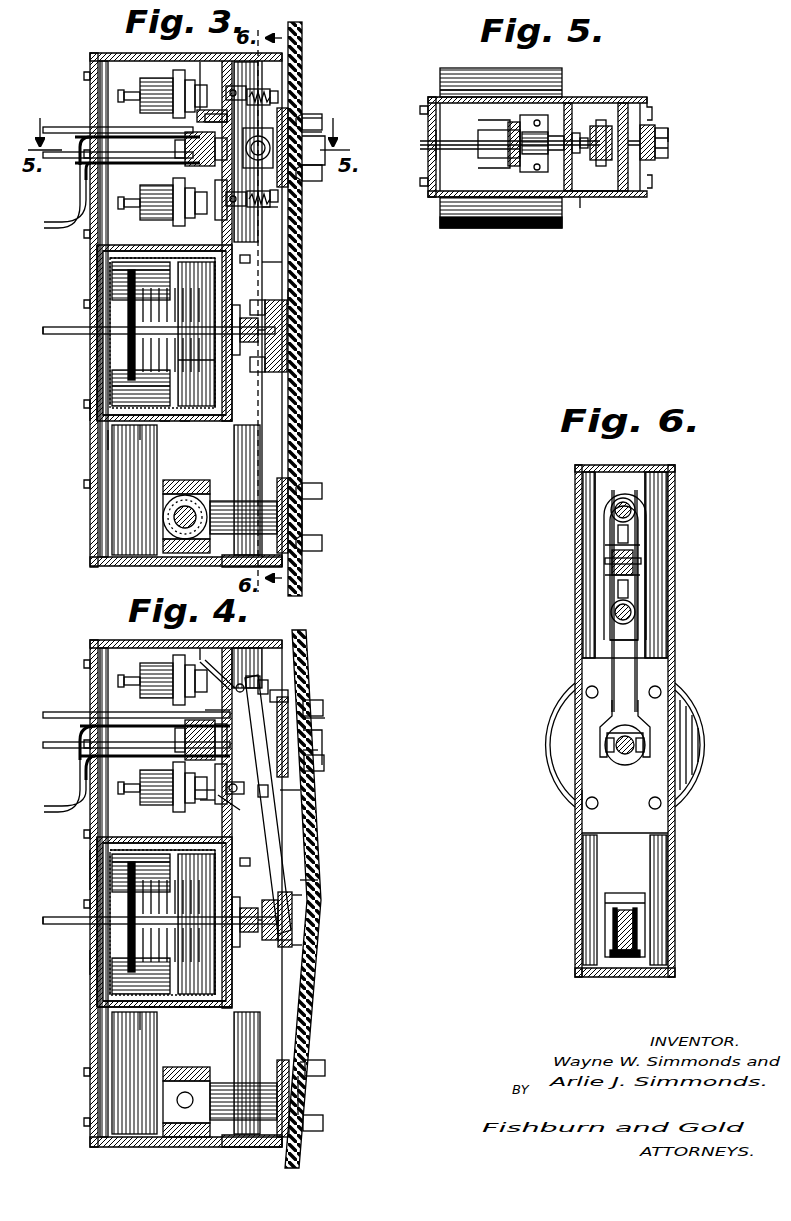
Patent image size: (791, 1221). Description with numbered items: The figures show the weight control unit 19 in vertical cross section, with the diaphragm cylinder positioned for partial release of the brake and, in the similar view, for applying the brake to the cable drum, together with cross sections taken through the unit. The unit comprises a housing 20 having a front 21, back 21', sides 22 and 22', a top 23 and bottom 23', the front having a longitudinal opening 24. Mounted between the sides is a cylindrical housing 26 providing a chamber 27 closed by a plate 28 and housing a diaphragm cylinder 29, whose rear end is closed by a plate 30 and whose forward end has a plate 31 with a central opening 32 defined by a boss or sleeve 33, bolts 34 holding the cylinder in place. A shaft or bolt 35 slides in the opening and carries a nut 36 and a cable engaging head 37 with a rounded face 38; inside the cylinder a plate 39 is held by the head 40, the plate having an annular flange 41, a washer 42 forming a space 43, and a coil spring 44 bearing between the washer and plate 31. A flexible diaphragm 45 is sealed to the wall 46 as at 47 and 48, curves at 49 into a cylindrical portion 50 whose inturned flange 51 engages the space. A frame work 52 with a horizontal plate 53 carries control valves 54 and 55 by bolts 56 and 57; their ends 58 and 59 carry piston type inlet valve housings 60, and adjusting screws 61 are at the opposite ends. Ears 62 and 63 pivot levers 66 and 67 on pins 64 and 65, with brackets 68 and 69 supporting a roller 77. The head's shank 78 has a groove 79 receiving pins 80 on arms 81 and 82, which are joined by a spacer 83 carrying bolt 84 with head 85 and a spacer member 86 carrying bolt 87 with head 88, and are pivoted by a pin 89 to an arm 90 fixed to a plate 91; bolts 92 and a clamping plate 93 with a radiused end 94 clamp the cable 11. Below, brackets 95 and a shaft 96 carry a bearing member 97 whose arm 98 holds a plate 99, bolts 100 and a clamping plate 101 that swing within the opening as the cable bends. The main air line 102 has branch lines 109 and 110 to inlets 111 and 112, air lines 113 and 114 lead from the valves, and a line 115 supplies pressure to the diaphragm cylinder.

In FIG. 3, the cable 11 is at (303, 30).
In FIG. 4, the cable 11 is at (304, 636).
In FIG. 5, the cable 11 is at (670, 144).
In FIG. 3, the weight control unit 19 is at (98, 62).
In FIG. 4, the weight control unit 19 is at (98, 648).
In FIG. 5, the weight control unit 19 is at (430, 98).
In FIG. 6, the weight control unit 19 is at (676, 468).
In FIG. 4, the housing 20 is at (98, 866).
In FIG. 5, the housing 20 is at (592, 198).
In FIG. 3, the front 21 is at (327, 418).
In FIG. 5, the front 21 is at (662, 143).
In FIG. 3, the back 21' is at (76, 413).
In FIG. 4, the back 21' is at (72, 966).
In FIG. 5, the back 21' is at (417, 165).
In FIG. 5, the side 22 is at (501, 157).
In FIG. 6, the side 22 is at (605, 811).
In FIG. 3, the side 22' is at (186, 505).
In FIG. 4, the side 22' is at (107, 984).
In FIG. 5, the side 22' is at (537, 135).
In FIG. 6, the side 22' is at (653, 565).
In FIG. 3, the top 23 is at (186, 299).
In FIG. 4, the top 23 is at (186, 880).
In FIG. 6, the top 23 is at (618, 709).
In FIG. 3, the bottom 23' is at (225, 505).
In FIG. 4, the bottom 23' is at (186, 1090).
In FIG. 6, the bottom 23' is at (599, 985).
In FIG. 5, the longitudinal opening 24 is at (660, 156).
In FIG. 6, the longitudinal opening 24 is at (634, 470).
In FIG. 3, the cylindrical housing 26 is at (150, 438).
In FIG. 4, the cylindrical housing 26 is at (195, 836).
In FIG. 5, the cylindrical housing 26 is at (482, 222).
In FIG. 6, the cylindrical housing 26 is at (548, 722).
In FIG. 3, the chamber 27 is at (195, 245).
In FIG. 4, the chamber 27 is at (170, 837).
In FIG. 3, the plate 28 is at (232, 412).
In FIG. 4, the plate 28 is at (234, 876).
In FIG. 5, the plate 28 is at (580, 132).
In FIG. 6, the plate 28 is at (578, 792).
In FIG. 3, the diaphragm cylinder 29 is at (185, 421).
In FIG. 4, the diaphragm cylinder 29 is at (205, 1008).
In FIG. 6, the diaphragm cylinder 29 is at (556, 762).
In FIG. 3, the plate 30 is at (103, 292).
In FIG. 4, the plate 30 is at (103, 940).
In FIG. 3, the plate 31 is at (206, 285).
In FIG. 4, the plate 31 is at (236, 990).
In FIG. 3, the central opening 32 is at (242, 345).
In FIG. 4, the central opening 32 is at (240, 918).
In FIG. 3, the boss or sleeve 33 is at (244, 310).
In FIG. 4, the boss or sleeve 33 is at (244, 935).
In FIG. 3, the bolts 34 is at (263, 262).
In FIG. 4, the bolts 34 is at (245, 856).
In FIG. 5, the bolts 34 is at (602, 100).
In FIG. 6, the bolts 34 is at (672, 692).
In FIG. 3, the shaft or bolt 35 is at (200, 360).
In FIG. 4, the shaft or bolt 35 is at (268, 936).
In FIG. 6, the shaft or bolt 35 is at (626, 768).
In FIG. 4, the nut 36 is at (280, 890).
In FIG. 3, the cable engaging head 37 is at (289, 331).
In FIG. 4, the cable engaging head 37 is at (300, 919).
In FIG. 6, the cable engaging head 37 is at (614, 762).
In FIG. 3, the rounded face 38 is at (303, 298).
In FIG. 4, the rounded face 38 is at (318, 880).
In FIG. 3, the plate 39 is at (128, 346).
In FIG. 4, the plate 39 is at (150, 926).
In FIG. 3, the head 40 is at (122, 328).
In FIG. 4, the head 40 is at (150, 930).
In FIG. 3, the annular flange 41 is at (112, 276).
In FIG. 4, the annular flange 41 is at (115, 882).
In FIG. 3, the washer 42 is at (150, 362).
In FIG. 4, the washer 42 is at (190, 884).
In FIG. 3, the space 43 is at (124, 376).
In FIG. 4, the space 43 is at (125, 986).
In FIG. 3, the coil spring 44 is at (175, 247).
In FIG. 4, the coil spring 44 is at (240, 960).
In FIG. 3, the flexible diaphragm 45 is at (165, 421).
In FIG. 4, the flexible diaphragm 45 is at (180, 1008).
In FIG. 3, the wall 46 is at (125, 245).
In FIG. 4, the wall 46 is at (145, 837).
In FIG. 3, the sealing securement 47 is at (145, 245).
In FIG. 4, the sealing securement 47 is at (125, 837).
In FIG. 3, the sealing securement 48 is at (110, 440).
In FIG. 4, the sealing securement 48 is at (150, 1008).
In FIG. 3, the curved portion 49 is at (158, 278).
In FIG. 4, the curved portion 49 is at (158, 866).
In FIG. 4, the cylindrical portion 50 is at (98, 1010).
In FIG. 3, the inturned annular flange 51 is at (98, 250).
In FIG. 4, the inturned annular flange 51 is at (110, 861).
In FIG. 3, the frame work 52 is at (217, 145).
In FIG. 4, the frame work 52 is at (185, 738).
In FIG. 3, the horizontal plate 53 is at (168, 165).
In FIG. 4, the horizontal plate 53 is at (172, 716).
In FIG. 3, the control valve 54 is at (150, 78).
In FIG. 4, the control valve 54 is at (150, 663).
In FIG. 6, the control valve 54 is at (646, 499).
In FIG. 3, the control valve 55 is at (145, 200).
In FIG. 4, the control valve 55 is at (145, 775).
In FIG. 5, the control valve 55 is at (482, 160).
In FIG. 4, the bolts 56 is at (217, 726).
In FIG. 5, the bolts 56 is at (540, 172).
In FIG. 5, the bolts 57 is at (535, 120).
In FIG. 4, the end 58 is at (215, 648).
In FIG. 3, the end 59 is at (228, 205).
In FIG. 4, the end 59 is at (228, 796).
In FIG. 3, the piston type inlet valve housings 60 is at (185, 132).
In FIG. 3, the adjusting screws 61 is at (124, 96).
In FIG. 4, the adjusting screws 61 is at (124, 681).
In FIG. 3, the ear 62 is at (222, 118).
In FIG. 3, the ear 63 is at (246, 150).
In FIG. 5, the ear 63 is at (560, 196).
In FIG. 4, the pin 64 is at (276, 700).
In FIG. 4, the pin 65 is at (225, 762).
In FIG. 4, the lever 66 is at (212, 674).
In FIG. 6, the lever 66 is at (640, 536).
In FIG. 4, the lever 67 is at (206, 795).
In FIG. 6, the lever 67 is at (640, 598).
In FIG. 3, the bracket 68 is at (232, 92).
In FIG. 4, the bracket 68 is at (245, 650).
In FIG. 3, the bracket 69 is at (222, 187).
In FIG. 4, the bracket 69 is at (230, 782).
In FIG. 5, the roller 77 is at (586, 160).
In FIG. 3, the shank portion 78 is at (289, 350).
In FIG. 4, the shank portion 78 is at (292, 935).
In FIG. 6, the shank portion 78 is at (625, 725).
In FIG. 3, the annular groove 79 is at (266, 372).
In FIG. 4, the annular groove 79 is at (282, 948).
In FIG. 6, the annular groove 79 is at (638, 755).
In FIG. 3, the pins 80 is at (112, 386).
In FIG. 4, the pins 80 is at (318, 903).
In FIG. 4, the arm 81 is at (280, 843).
In FIG. 6, the arm 81 is at (612, 712).
In FIG. 3, the arm 82 is at (290, 270).
In FIG. 6, the arm 82 is at (692, 722).
In FIG. 3, the spacer 83 is at (286, 98).
In FIG. 6, the spacer 83 is at (620, 470).
In FIG. 3, the bolt 84 is at (272, 96).
In FIG. 4, the bolt 84 is at (262, 690).
In FIG. 6, the bolt 84 is at (612, 511).
In FIG. 3, the head 85 is at (288, 115).
In FIG. 4, the head 85 is at (243, 685).
In FIG. 3, the spacer member 86 is at (274, 205).
In FIG. 6, the spacer member 86 is at (612, 628).
In FIG. 3, the bolt 87 is at (280, 195).
In FIG. 4, the bolt 87 is at (290, 788).
In FIG. 6, the bolt 87 is at (612, 615).
In FIG. 3, the head 88 is at (270, 215).
In FIG. 4, the head 88 is at (268, 795).
In FIG. 3, the pin 89 is at (325, 142).
In FIG. 4, the pin 89 is at (320, 738).
In FIG. 5, the pin 89 is at (600, 192).
In FIG. 6, the pin 89 is at (608, 570).
In FIG. 3, the arm 90 is at (325, 170).
In FIG. 4, the arm 90 is at (288, 700).
In FIG. 5, the arm 90 is at (600, 156).
In FIG. 6, the arm 90 is at (612, 560).
In FIG. 3, the plate 91 is at (312, 118).
In FIG. 4, the plate 91 is at (316, 752).
In FIG. 5, the plate 91 is at (648, 102).
In FIG. 3, the bolts 92 is at (324, 120).
In FIG. 4, the bolts 92 is at (324, 708).
In FIG. 5, the bolts 92 is at (670, 137).
In FIG. 3, the clamping or retaining plate 93 is at (322, 132).
In FIG. 4, the clamping or retaining plate 93 is at (325, 726).
In FIG. 5, the clamping or retaining plate 93 is at (670, 128).
In FIG. 3, the radiused lower end 94 is at (322, 176).
In FIG. 4, the radiused lower end 94 is at (326, 764).
In FIG. 3, the brackets 95 is at (165, 490).
In FIG. 4, the brackets 95 is at (166, 1080).
In FIG. 6, the brackets 95 is at (626, 895).
In FIG. 3, the shaft 96 is at (165, 516).
In FIG. 4, the shaft 96 is at (178, 1102).
In FIG. 6, the shaft 96 is at (636, 912).
In FIG. 3, the bearing member 97 is at (166, 524).
In FIG. 4, the bearing member 97 is at (200, 1068).
In FIG. 6, the bearing member 97 is at (638, 945).
In FIG. 3, the arm 98 is at (268, 504).
In FIG. 4, the arm 98 is at (246, 1088).
In FIG. 6, the arm 98 is at (628, 957).
In FIG. 3, the plate 99 is at (282, 560).
In FIG. 4, the plate 99 is at (280, 1060).
In FIG. 3, the bolts 100 is at (323, 490).
In FIG. 4, the bolts 100 is at (326, 1066).
In FIG. 3, the clamping or retaining plate 101 is at (323, 522).
In FIG. 4, the clamping or retaining plate 101 is at (326, 1117).
In FIG. 3, the main air line 102 is at (46, 232).
In FIG. 4, the main air line 102 is at (46, 812).
In FIG. 3, the branch line 109 is at (80, 137).
In FIG. 3, the branch line 110 is at (78, 168).
In FIG. 5, the branch line 110 is at (420, 150).
In FIG. 3, the inlet 111 is at (200, 110).
In FIG. 4, the inlet 112 is at (190, 780).
In FIG. 3, the air line 113 is at (58, 126).
In FIG. 4, the air line 113 is at (52, 714).
In FIG. 3, the air line 114 is at (50, 160).
In FIG. 4, the air line 114 is at (46, 748).
In FIG. 5, the air line 114 is at (420, 143).
In FIG. 3, the line 115 is at (46, 336).
In FIG. 4, the line 115 is at (46, 926).